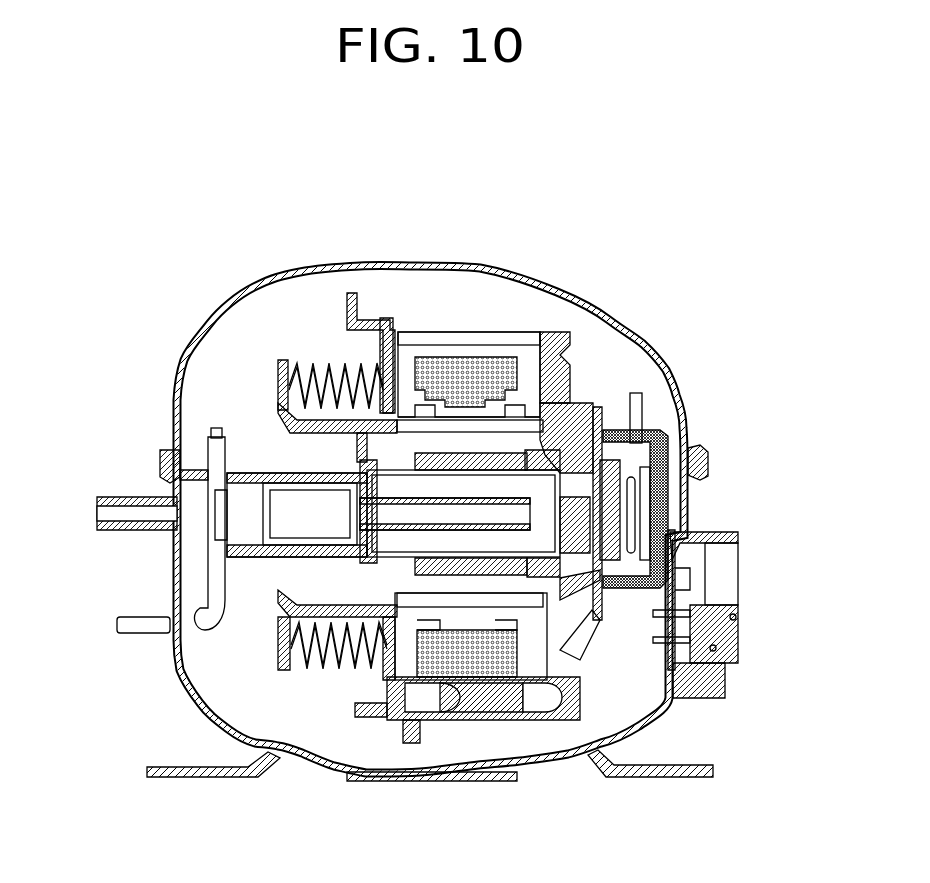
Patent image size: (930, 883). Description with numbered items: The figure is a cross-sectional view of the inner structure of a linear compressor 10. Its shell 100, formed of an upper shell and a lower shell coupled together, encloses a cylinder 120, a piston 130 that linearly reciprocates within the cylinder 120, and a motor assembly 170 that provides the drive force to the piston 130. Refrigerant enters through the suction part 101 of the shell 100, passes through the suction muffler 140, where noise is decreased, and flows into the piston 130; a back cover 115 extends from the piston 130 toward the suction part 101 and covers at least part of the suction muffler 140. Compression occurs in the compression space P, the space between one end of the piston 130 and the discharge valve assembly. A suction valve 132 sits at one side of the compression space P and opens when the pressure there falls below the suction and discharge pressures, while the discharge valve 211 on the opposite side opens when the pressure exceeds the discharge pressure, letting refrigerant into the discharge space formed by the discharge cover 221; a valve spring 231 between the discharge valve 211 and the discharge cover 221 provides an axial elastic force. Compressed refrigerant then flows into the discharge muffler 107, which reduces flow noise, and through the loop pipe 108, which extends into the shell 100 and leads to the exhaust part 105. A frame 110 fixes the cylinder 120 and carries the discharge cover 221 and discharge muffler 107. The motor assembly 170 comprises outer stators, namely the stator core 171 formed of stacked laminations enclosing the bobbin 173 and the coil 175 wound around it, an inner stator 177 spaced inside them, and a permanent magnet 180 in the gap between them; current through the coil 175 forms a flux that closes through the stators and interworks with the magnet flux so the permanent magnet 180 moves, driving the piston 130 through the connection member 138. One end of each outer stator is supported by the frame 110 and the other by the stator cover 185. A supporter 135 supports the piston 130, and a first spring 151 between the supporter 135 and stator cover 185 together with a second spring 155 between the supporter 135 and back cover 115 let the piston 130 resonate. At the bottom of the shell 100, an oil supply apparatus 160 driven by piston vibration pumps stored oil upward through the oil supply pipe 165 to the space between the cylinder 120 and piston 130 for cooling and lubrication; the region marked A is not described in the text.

The linear compressor 10 is at (520, 262).
The shell 100 is at (628, 322).
The stator cover 185 is at (358, 292).
The first spring 151 is at (337, 357).
The supporter 135 is at (273, 371).
The connection member 138 is at (280, 404).
The motor assembly 170 is at (433, 300).
The coil 175 is at (468, 355).
The stator core 171 is at (572, 333).
The bobbin 173 is at (600, 360).
The frame 110 is at (600, 400).
The gap region A is at (630, 398).
The loop pipe 108 is at (640, 420).
The discharge muffler 107 is at (662, 440).
The cylinder 120 is at (705, 462).
The valve spring 231 is at (645, 470).
The piston 130 is at (610, 495).
The discharge cover 221 is at (672, 532).
The discharge valve 211 is at (700, 560).
The compression space P is at (692, 605).
The oil supply pipe 165 is at (700, 662).
The back cover 115 is at (165, 452).
The suction part 101 is at (103, 500).
The suction muffler 140 is at (220, 550).
The exhaust part 105 is at (115, 623).
The second spring 155 is at (278, 572).
The permanent magnet 180 is at (450, 440).
The inner stator 177 is at (477, 443).
The oil supply apparatus 160 is at (525, 730).
The suction valve 132 is at (537, 580).